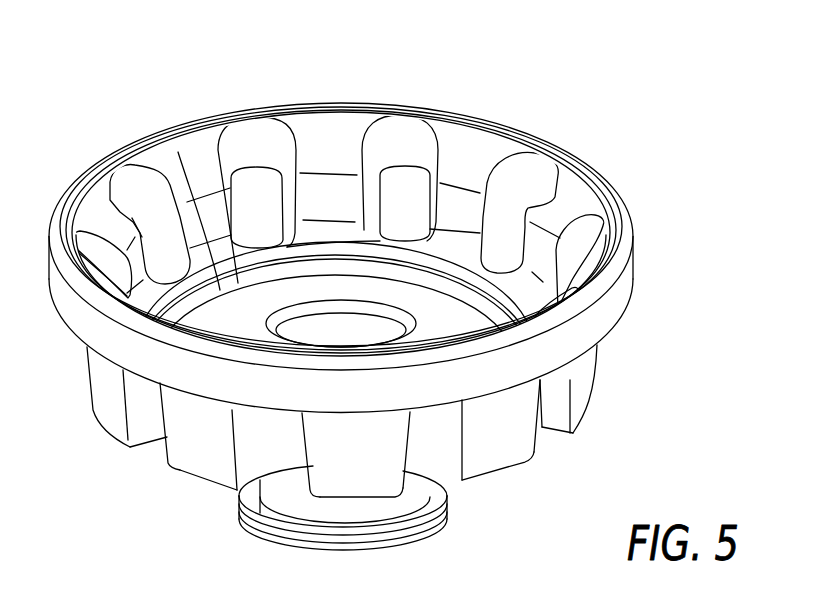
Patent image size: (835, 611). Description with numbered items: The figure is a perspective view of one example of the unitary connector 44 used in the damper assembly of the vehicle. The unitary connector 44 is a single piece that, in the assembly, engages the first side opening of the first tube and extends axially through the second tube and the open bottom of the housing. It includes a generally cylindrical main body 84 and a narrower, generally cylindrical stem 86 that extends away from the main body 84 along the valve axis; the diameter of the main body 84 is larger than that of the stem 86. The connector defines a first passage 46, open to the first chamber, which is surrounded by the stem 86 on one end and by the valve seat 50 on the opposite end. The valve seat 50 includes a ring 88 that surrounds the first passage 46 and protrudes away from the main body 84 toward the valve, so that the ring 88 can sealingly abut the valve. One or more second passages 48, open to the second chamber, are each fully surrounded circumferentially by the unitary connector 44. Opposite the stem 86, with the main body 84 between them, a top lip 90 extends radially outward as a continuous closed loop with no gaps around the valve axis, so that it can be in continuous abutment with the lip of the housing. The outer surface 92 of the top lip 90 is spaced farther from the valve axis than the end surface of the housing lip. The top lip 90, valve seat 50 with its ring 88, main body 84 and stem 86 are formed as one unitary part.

The unitary connector 44 is at (153, 64).
The first passage 46 is at (360, 337).
The second passages 48 is at (252, 142).
The valve seat 50 is at (342, 263).
The main body 84 is at (498, 445).
The stem 86 is at (258, 517).
The ring 88 is at (180, 160).
The top lip 90 is at (623, 315).
The outer surface 92 is at (600, 327).